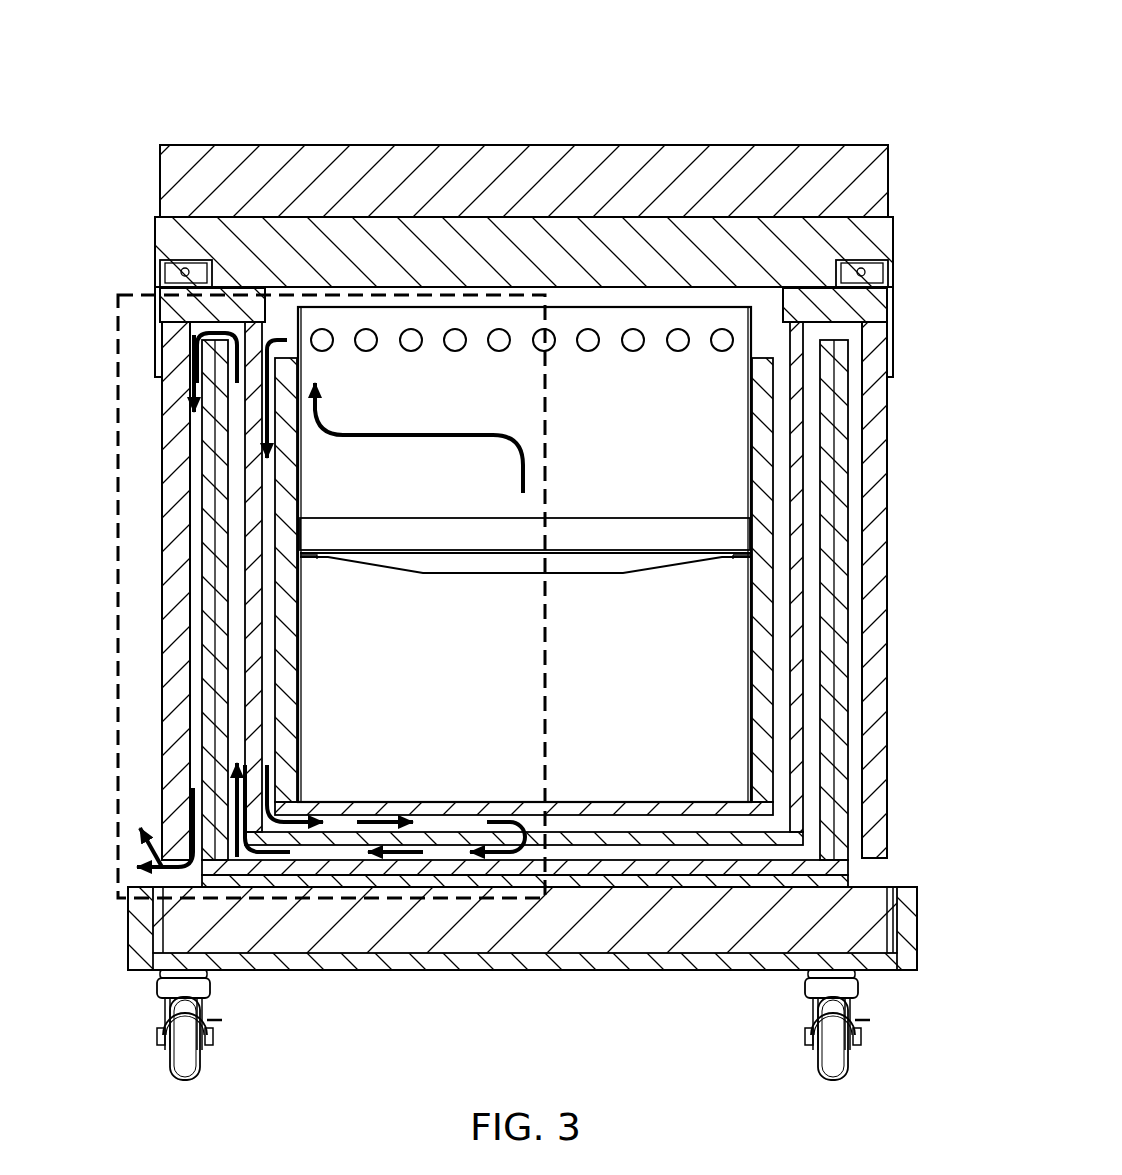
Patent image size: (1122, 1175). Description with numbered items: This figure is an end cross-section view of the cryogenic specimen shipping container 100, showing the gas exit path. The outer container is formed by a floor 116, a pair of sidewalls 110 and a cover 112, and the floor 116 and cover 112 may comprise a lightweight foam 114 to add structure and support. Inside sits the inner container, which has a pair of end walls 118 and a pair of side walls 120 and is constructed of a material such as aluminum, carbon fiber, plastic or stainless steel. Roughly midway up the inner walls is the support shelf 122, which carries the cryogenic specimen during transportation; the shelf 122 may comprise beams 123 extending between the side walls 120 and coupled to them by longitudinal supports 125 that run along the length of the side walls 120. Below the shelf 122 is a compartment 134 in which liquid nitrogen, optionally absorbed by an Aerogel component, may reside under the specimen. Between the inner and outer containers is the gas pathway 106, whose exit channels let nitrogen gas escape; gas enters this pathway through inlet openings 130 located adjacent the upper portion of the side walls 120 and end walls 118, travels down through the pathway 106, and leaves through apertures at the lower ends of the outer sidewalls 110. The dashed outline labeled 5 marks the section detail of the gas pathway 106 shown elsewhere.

The cryogenic specimen shipping container 100 is at (679, 84).
The cover 112 is at (378, 143).
The lightweight foam 114 is at (878, 182).
The sidewalls 110 is at (160, 405).
The section line for FIG. 5 is at (118, 515).
The gas pathway 106 is at (155, 632).
The inlet openings 130 is at (678, 348).
The support shelf 122 is at (594, 494).
The beams 123 is at (428, 517).
The longitudinal supports 125 is at (310, 562).
The compartment 134 is at (667, 698).
The side walls 120 is at (300, 703).
The floor 116 is at (683, 808).
The end walls 118 is at (618, 790).